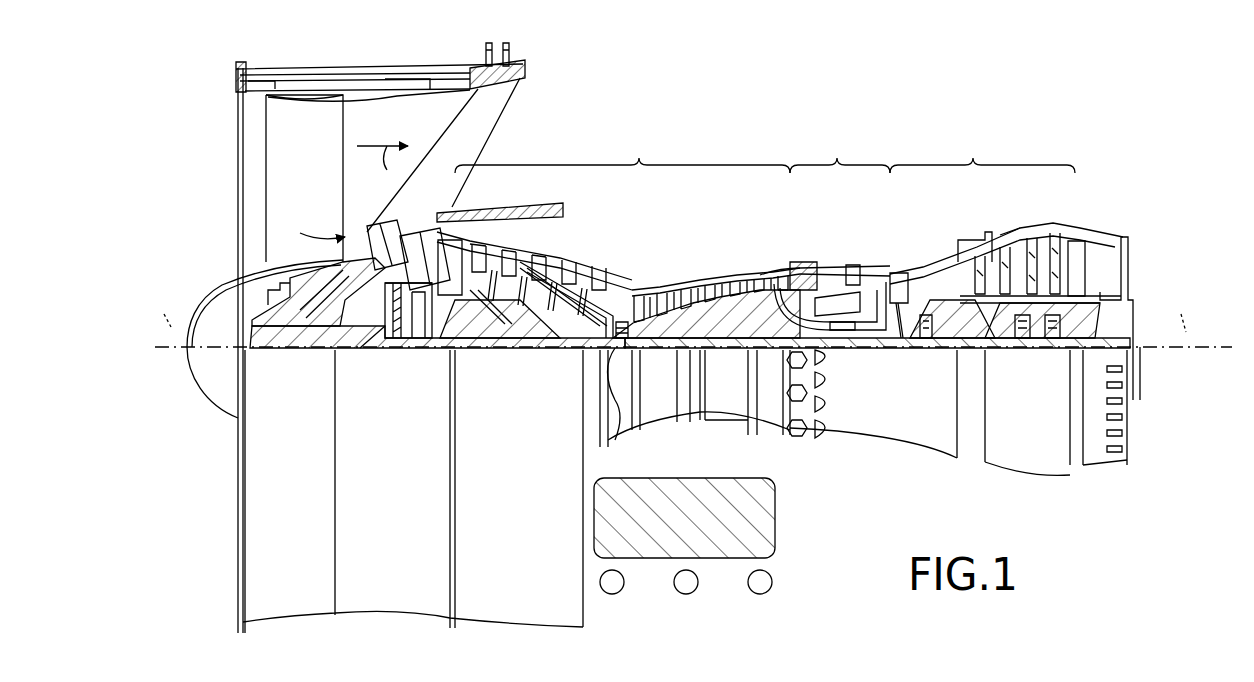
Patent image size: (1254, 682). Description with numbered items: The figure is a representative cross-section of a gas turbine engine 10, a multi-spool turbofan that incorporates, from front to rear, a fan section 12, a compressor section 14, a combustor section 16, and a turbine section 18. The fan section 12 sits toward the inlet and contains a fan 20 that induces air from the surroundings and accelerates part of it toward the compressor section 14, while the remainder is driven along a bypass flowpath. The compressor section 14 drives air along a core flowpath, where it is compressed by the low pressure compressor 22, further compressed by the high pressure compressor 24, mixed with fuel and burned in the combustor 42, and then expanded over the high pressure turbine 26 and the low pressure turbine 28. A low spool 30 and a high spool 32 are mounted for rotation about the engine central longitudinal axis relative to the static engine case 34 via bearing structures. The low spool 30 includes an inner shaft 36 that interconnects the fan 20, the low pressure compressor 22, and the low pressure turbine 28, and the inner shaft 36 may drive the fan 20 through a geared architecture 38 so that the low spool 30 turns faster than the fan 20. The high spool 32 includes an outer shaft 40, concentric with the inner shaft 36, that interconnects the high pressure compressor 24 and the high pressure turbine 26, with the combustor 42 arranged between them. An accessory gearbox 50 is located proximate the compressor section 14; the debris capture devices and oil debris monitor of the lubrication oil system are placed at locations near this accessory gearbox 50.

The gas turbine engine 10 is at (888, 100).
The fan section 12 is at (448, 53).
The compressor section 14 is at (575, 238).
The combustor section 16 is at (832, 229).
The turbine section 18 is at (965, 301).
The fan 20 is at (316, 186).
The low pressure compressor 22 is at (523, 256).
The high pressure compressor 24 is at (713, 310).
The high pressure turbine 26 is at (899, 270).
The low pressure turbine 28 is at (1016, 245).
The low spool 30 is at (735, 375).
The high spool 32 is at (768, 290).
The engine case 34 is at (775, 432).
The inner shaft 36 is at (600, 355).
The geared architecture 38 is at (427, 338).
The outer shaft 40 is at (838, 330).
The combustor 42 is at (832, 300).
The accessory gearbox 50 is at (775, 512).